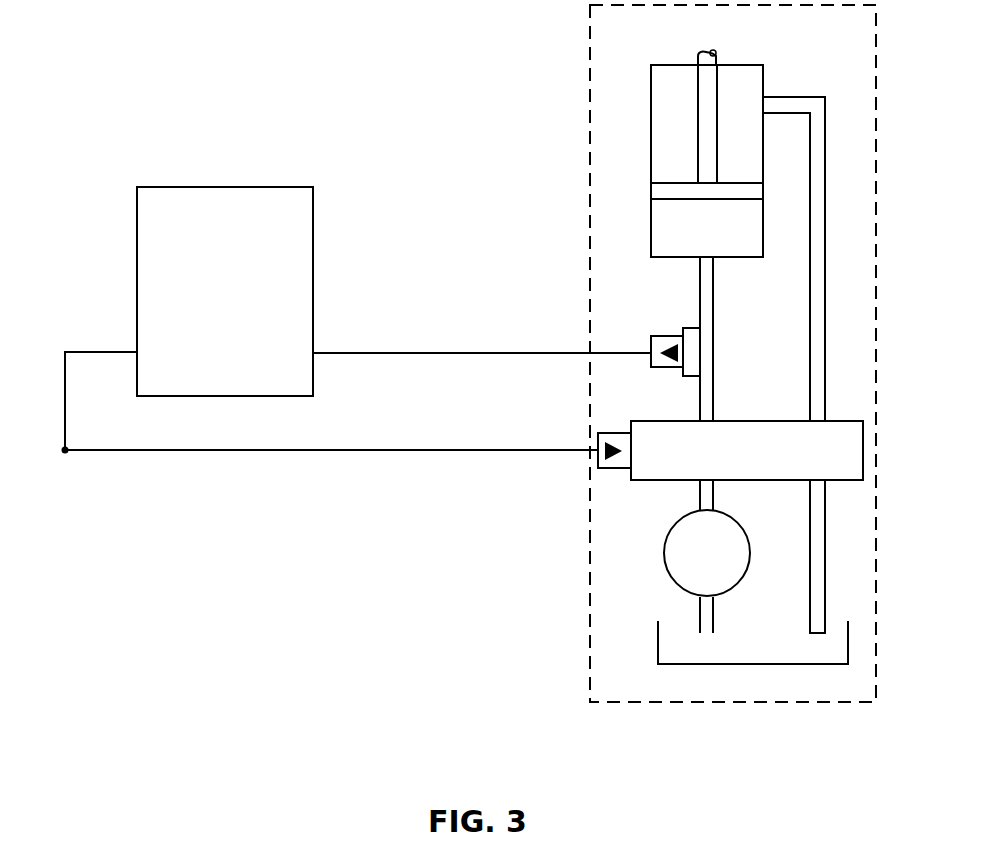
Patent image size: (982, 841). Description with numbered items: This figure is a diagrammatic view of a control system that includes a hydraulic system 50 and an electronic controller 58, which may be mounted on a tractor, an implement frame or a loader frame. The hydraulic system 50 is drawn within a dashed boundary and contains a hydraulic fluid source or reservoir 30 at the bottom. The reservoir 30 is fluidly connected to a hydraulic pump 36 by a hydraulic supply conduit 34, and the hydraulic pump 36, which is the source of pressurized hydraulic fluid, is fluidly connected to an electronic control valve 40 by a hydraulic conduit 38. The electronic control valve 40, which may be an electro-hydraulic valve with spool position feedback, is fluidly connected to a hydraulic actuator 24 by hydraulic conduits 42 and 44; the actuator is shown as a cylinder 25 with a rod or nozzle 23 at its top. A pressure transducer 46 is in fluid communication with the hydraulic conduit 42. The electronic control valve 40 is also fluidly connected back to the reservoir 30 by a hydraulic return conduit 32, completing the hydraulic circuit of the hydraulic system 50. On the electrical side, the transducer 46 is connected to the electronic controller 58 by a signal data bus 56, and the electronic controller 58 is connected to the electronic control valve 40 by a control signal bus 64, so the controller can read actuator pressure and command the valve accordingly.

The nozzle 23 is at (717, 62).
The hydraulic actuator 24 is at (781, 87).
The cylinder 25 is at (651, 130).
The reservoir 30 is at (658, 631).
The hydraulic return conduit 32 is at (825, 547).
The hydraulic supply conduit 34 is at (713, 617).
The hydraulic pump 36 is at (665, 553).
The hydraulic conduit 38 is at (713, 492).
The electronic control valve 40 is at (863, 421).
The hydraulic conduit 42 is at (713, 288).
The hydraulic conduit 44 is at (825, 262).
The transducer 46 is at (692, 377).
The hydraulic system 50 is at (590, 527).
The signal data bus 56 is at (362, 355).
The electronic controller 58 is at (193, 187).
The control signal bus 64 is at (162, 452).